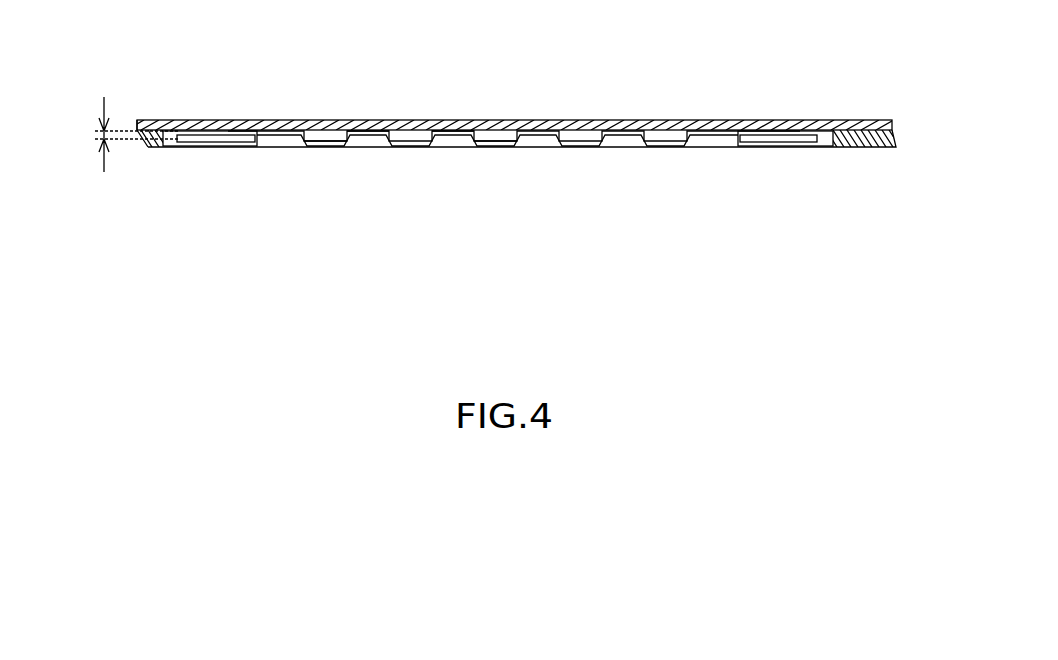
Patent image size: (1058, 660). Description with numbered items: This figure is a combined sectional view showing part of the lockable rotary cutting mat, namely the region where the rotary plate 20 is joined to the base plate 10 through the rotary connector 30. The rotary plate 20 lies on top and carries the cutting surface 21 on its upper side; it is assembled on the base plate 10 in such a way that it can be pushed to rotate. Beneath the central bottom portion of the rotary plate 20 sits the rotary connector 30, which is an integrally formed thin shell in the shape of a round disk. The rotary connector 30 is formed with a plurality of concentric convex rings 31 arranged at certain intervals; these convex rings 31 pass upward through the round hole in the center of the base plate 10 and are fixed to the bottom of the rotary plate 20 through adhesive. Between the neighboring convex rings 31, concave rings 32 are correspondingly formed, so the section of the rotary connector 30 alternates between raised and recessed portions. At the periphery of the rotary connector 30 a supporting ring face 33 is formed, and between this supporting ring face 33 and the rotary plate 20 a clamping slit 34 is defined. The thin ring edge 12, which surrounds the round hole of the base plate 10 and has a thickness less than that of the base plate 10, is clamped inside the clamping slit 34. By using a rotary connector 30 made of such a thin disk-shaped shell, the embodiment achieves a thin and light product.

The base plate 10 is at (870, 150).
The thin ring edge 12 is at (228, 131).
The rotary plate 20 is at (604, 119).
The cutting surface 21 is at (178, 119).
The rotary connector 30 is at (699, 152).
The convex rings 31 is at (452, 120).
The concave rings 32 is at (319, 121).
The supporting ring face 33 is at (212, 131).
The clamping slit 34 is at (118, 134).